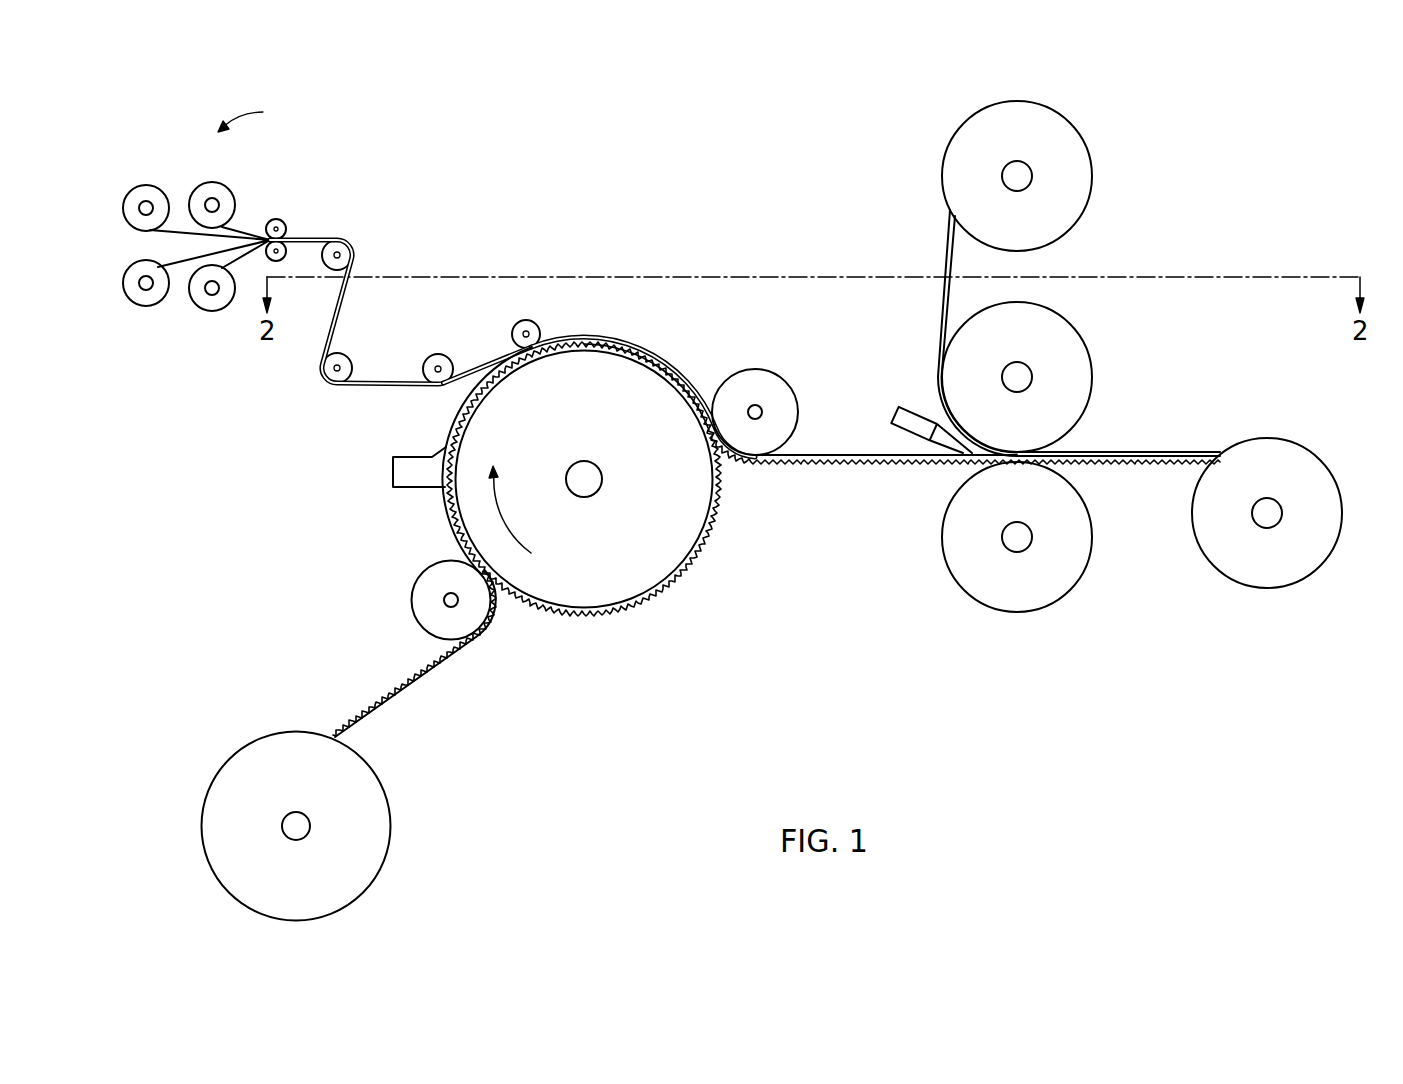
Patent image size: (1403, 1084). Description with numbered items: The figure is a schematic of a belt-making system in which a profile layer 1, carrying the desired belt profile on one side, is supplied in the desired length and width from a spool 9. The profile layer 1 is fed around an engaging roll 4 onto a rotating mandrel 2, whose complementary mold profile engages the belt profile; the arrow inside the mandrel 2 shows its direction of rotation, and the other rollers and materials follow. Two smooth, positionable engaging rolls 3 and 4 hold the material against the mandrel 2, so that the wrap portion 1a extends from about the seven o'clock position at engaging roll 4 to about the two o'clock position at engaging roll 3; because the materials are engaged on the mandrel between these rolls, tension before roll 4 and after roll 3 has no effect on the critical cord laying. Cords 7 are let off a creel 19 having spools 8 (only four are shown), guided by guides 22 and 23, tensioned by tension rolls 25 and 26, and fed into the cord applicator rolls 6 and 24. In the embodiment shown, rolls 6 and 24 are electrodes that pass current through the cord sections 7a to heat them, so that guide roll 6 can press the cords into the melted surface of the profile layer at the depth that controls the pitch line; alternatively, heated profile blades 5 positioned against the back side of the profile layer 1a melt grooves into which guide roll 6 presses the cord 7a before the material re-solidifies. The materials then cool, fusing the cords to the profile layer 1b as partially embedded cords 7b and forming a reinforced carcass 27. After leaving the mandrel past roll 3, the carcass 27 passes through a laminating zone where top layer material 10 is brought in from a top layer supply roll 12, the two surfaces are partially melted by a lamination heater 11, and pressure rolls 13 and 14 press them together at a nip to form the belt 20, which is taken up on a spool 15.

The profile layer 1 is at (400, 681).
The wrap portion of profile layer 1a is at (448, 430).
The reinforced profile layer 1b is at (658, 357).
The mandrel 2 is at (650, 575).
The engaging roll 3 is at (768, 382).
The engaging roll 4 is at (431, 577).
The heated profile blades 5 is at (402, 483).
The cord applicator roll 6 is at (523, 321).
The cords 7 is at (348, 289).
The cord sections 7a is at (490, 365).
The partially embedded cords 7b is at (610, 340).
The spools 8 is at (212, 190).
The spool 9 is at (360, 771).
The top layer material 10 is at (948, 262).
The lamination heater 11 is at (898, 411).
The supply roll of third web 12 is at (1073, 207).
The pressure roll 13 is at (1078, 348).
The pressure roll 14 is at (1082, 552).
The spool 15 is at (1312, 460).
The creel 19 is at (256, 114).
The belt 20 is at (1153, 450).
The guide 22 is at (284, 259).
The guide 23 is at (283, 222).
The cord applicator roll 24 is at (436, 355).
The tension roll 25 is at (347, 247).
The tension roll 26 is at (347, 362).
The reinforced carcass 27 is at (832, 455).